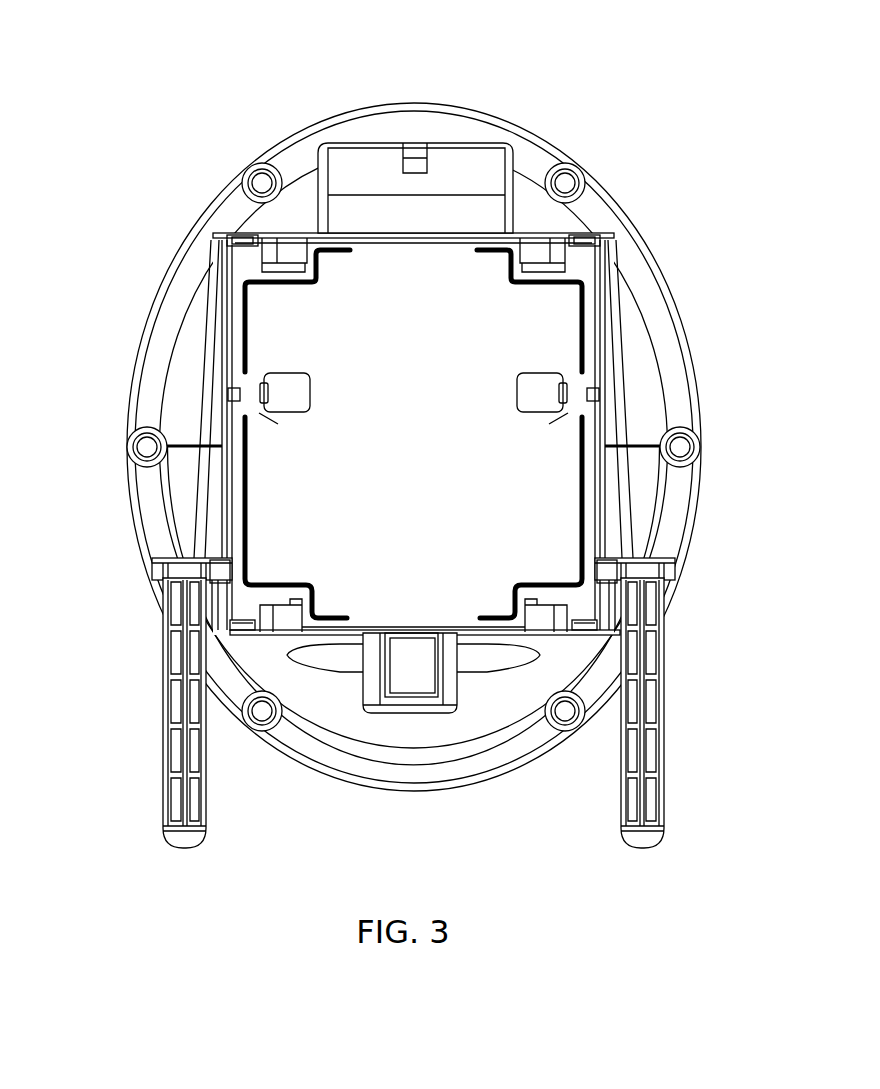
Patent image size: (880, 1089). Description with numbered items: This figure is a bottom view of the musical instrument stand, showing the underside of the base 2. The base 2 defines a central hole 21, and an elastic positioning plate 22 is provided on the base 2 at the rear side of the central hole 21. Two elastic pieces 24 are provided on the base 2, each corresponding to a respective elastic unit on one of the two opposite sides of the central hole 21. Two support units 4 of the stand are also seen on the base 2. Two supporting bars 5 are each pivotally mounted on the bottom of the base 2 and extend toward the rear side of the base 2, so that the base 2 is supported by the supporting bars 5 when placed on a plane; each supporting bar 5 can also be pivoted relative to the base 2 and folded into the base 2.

The base 2 is at (468, 98).
The central hole 21 is at (381, 290).
The elastic positioning plate 22 is at (403, 683).
The support unit 4 is at (283, 360).
The elastic piece 24 is at (262, 392).
The supporting bar 5 is at (152, 750).